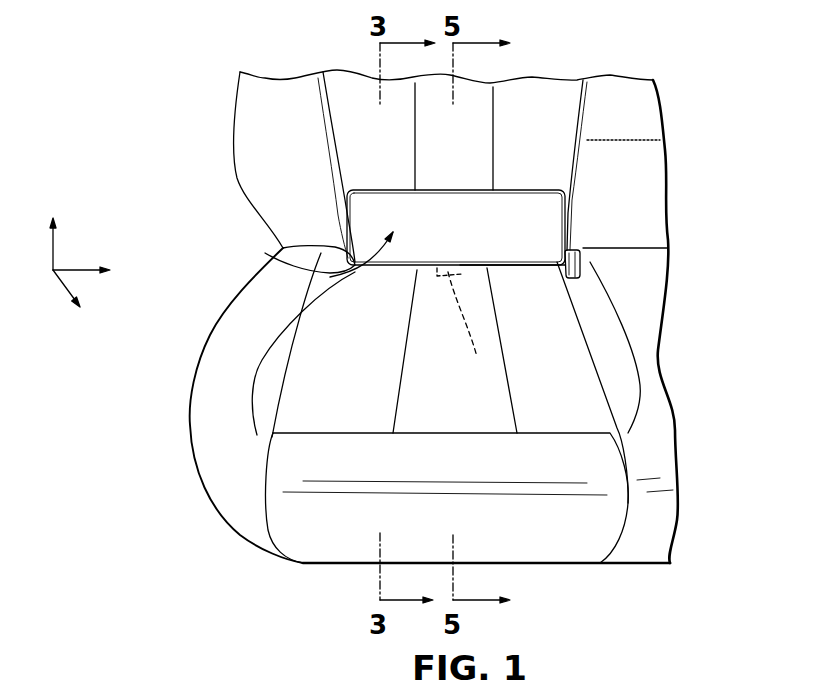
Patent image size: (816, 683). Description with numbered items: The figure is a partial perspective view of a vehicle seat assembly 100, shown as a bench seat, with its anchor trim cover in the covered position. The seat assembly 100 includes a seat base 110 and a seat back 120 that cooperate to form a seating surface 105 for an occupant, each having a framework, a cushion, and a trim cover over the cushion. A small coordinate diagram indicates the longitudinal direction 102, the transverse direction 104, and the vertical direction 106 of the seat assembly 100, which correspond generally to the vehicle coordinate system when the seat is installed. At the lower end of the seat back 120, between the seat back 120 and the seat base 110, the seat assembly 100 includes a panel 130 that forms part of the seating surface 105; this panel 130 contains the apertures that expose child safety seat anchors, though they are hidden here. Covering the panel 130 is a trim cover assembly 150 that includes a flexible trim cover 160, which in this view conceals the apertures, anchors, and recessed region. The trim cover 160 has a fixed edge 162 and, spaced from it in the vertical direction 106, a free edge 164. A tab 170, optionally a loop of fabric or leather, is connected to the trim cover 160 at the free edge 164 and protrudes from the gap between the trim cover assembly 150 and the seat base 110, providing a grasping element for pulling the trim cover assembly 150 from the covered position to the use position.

The vehicle seat assembly 100 is at (335, 62).
The longitudinal direction 102 is at (105, 343).
The transverse direction 104 is at (155, 285).
The vertical direction 106 is at (72, 213).
The seating surface 105 is at (325, 403).
The seat base 110 is at (540, 357).
The seat back 120 is at (543, 140).
The panel 130 is at (600, 224).
The trim cover assembly 150 is at (280, 261).
The trim cover 160 is at (373, 217).
The fixed edge 162 is at (541, 193).
The free edge 164 is at (517, 263).
The tab 170 is at (465, 330).